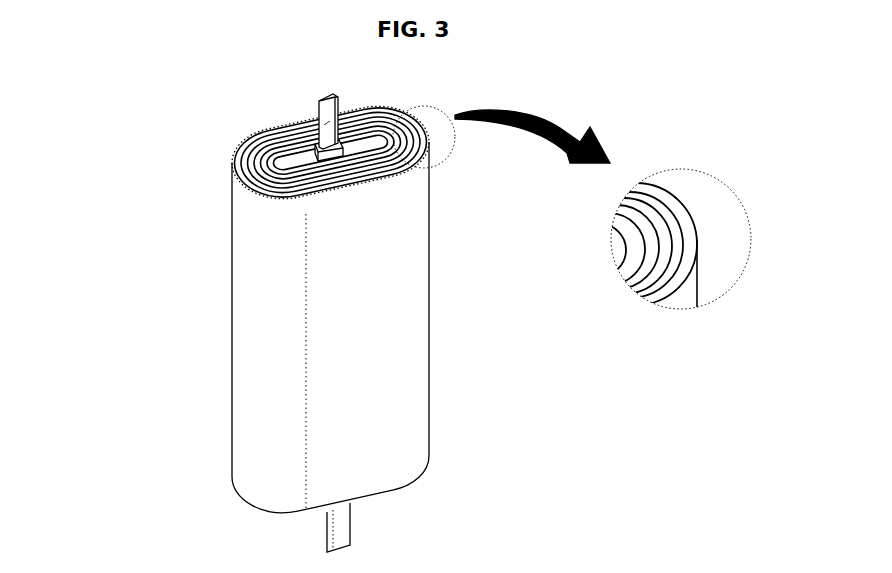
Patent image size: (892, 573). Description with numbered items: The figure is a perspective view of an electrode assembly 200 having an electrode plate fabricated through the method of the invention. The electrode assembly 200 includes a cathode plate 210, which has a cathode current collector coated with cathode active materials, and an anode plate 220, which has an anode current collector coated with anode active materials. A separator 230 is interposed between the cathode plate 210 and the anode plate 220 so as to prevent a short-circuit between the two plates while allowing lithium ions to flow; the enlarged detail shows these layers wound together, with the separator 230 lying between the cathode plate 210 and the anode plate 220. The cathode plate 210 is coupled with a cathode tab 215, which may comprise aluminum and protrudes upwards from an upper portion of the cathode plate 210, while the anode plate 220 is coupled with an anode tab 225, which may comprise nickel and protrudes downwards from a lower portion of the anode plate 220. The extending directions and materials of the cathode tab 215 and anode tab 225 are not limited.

The electrode assembly 200 is at (150, 156).
The cathode plate 210 is at (642, 255).
The cathode tab 215 is at (297, 118).
The anode plate 220 is at (663, 228).
The anode tab 225 is at (342, 532).
The separator 230 is at (690, 229).